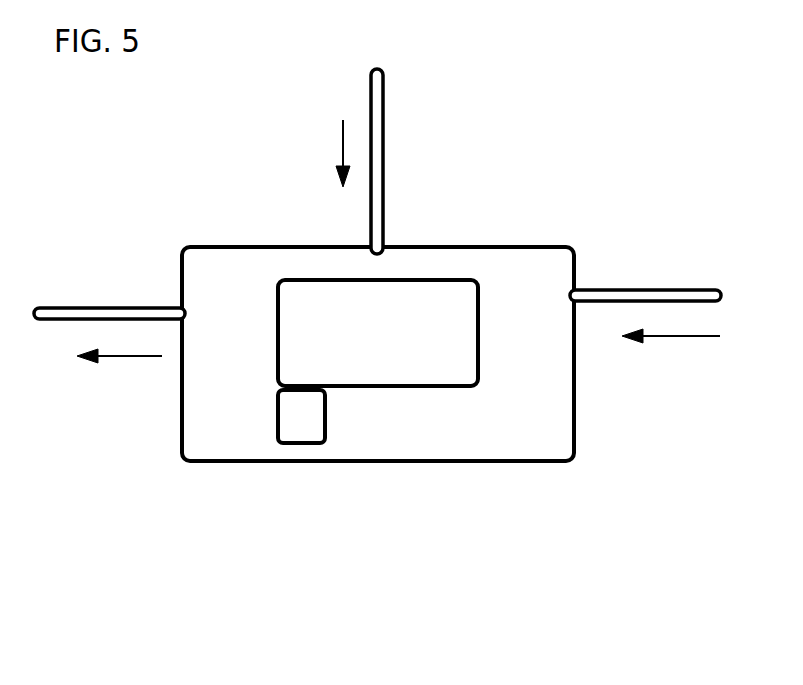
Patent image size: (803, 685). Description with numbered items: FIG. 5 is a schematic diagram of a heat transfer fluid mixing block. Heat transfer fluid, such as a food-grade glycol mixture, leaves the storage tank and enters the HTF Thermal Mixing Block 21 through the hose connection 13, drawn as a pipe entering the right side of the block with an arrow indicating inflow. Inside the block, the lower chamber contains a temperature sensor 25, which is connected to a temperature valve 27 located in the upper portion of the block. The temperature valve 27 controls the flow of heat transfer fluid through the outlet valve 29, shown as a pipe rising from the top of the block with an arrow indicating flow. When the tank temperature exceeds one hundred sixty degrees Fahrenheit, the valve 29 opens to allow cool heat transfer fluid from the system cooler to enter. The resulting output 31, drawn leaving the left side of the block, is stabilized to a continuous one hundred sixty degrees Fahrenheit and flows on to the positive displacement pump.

The HTF Thermal Mixing Block 21 is at (518, 422).
The temperature valve 27 is at (395, 343).
The temperature sensor 25 is at (305, 422).
The outlet valve 29 is at (386, 162).
The output 31 is at (100, 320).
The hose connection 13 is at (620, 287).